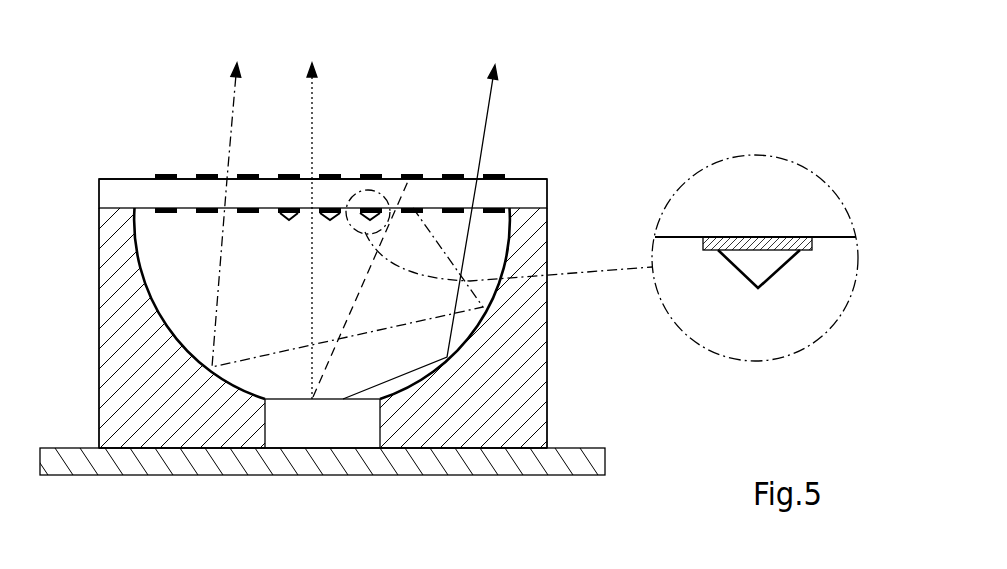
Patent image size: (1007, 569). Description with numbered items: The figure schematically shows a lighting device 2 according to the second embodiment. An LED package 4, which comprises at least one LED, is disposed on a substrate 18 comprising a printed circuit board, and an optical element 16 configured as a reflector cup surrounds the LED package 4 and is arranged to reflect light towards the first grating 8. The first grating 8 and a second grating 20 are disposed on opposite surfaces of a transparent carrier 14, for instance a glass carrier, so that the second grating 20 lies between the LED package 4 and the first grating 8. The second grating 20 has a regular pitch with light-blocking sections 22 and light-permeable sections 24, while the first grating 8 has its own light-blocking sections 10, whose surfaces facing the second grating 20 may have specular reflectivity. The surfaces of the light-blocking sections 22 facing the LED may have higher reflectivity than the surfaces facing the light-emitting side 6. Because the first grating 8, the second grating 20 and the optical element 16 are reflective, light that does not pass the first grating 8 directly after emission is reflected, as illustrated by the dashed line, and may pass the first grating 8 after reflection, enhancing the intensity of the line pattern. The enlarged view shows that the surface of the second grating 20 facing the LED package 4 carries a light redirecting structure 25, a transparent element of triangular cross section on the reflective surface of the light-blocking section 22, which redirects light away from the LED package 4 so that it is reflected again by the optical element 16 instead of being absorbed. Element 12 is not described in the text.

The lighting device 2 is at (622, 102).
The LED package 4 is at (332, 433).
The light-emitting side 6 is at (419, 37).
The first grating 8 is at (340, 156).
The light-blocking sections 10 is at (203, 175).
The radiation exit surface 12 is at (183, 177).
The transparent carrier 14 is at (537, 194).
The optical element 16 is at (530, 332).
The substrate 18 is at (587, 462).
The second grating 20 is at (266, 246).
The light-blocking sections 22 is at (207, 213).
The light-permeable sections 24 is at (188, 215).
The light redirecting structure 25 is at (760, 272).